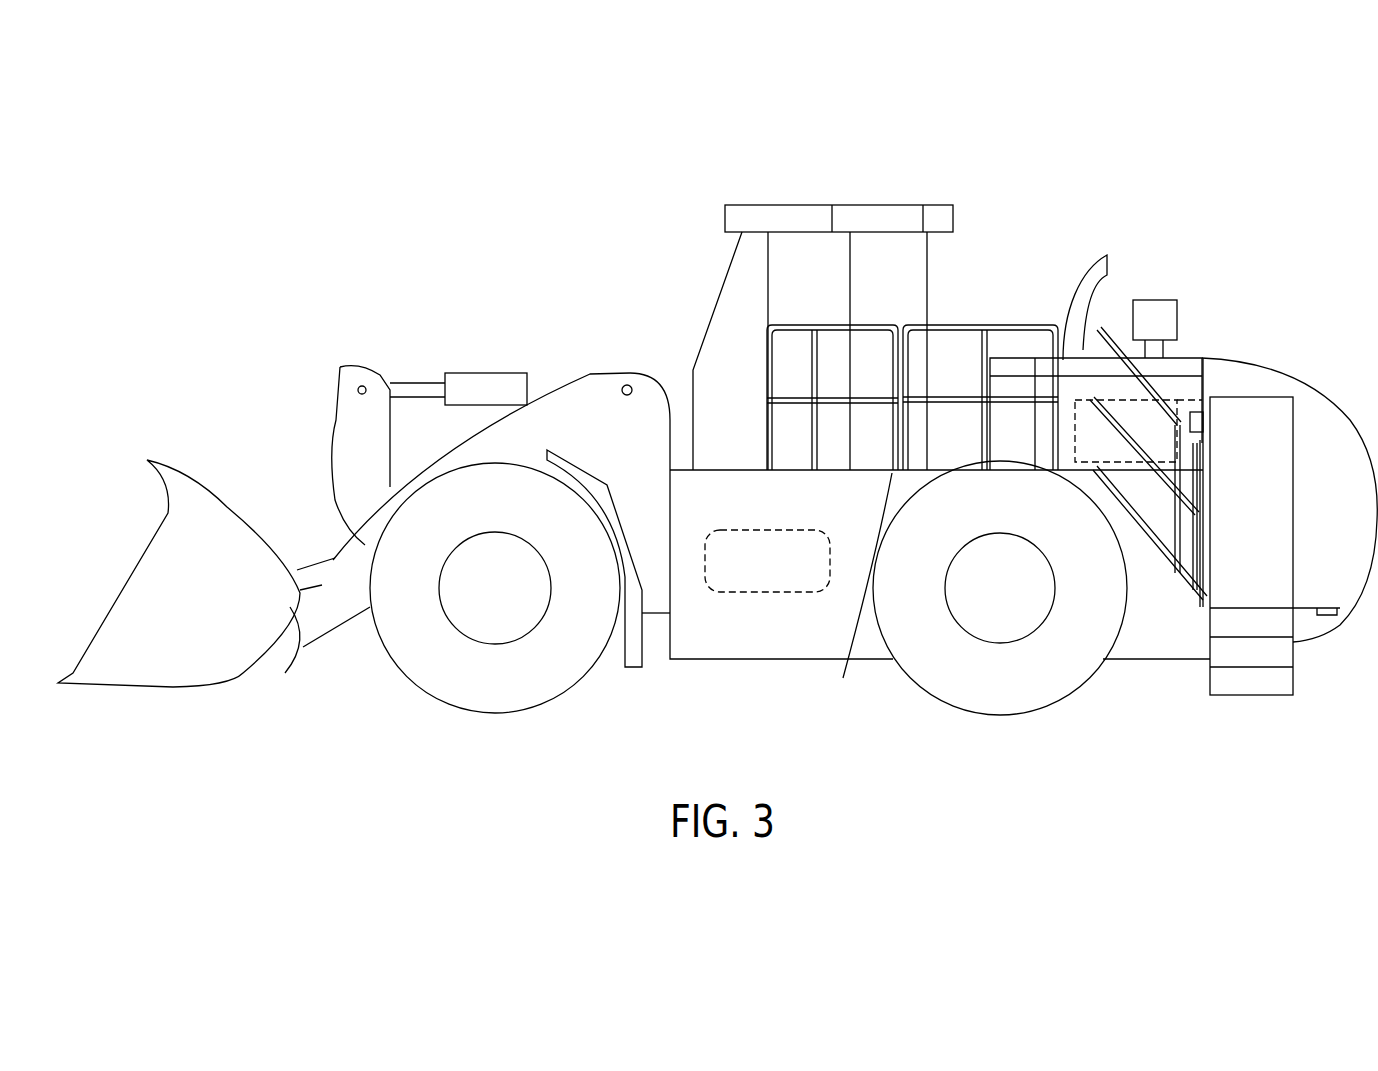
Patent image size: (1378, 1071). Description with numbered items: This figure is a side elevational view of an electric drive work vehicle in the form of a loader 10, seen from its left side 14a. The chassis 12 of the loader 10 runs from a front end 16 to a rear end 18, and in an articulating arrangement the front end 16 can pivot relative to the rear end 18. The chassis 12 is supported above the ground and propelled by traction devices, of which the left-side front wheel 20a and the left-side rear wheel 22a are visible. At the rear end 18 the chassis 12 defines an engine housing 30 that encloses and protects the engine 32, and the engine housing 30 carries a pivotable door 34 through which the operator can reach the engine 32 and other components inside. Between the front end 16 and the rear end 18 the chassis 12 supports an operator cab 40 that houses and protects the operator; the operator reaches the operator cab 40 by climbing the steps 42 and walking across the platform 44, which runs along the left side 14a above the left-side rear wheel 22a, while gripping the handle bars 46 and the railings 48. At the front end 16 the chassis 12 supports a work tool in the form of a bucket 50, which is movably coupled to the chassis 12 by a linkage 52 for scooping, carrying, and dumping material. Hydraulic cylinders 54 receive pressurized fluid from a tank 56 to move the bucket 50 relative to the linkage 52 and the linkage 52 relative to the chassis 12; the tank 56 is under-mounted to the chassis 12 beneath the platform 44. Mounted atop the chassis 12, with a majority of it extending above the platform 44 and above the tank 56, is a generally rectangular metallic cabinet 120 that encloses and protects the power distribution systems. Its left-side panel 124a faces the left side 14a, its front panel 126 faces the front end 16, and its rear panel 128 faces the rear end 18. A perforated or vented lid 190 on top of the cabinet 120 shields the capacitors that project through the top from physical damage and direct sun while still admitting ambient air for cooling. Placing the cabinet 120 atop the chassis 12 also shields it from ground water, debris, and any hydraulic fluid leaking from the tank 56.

The loader 10 is at (1125, 197).
The chassis 12 is at (805, 645).
The left side 14a is at (985, 745).
The front end 16 is at (207, 335).
The rear end 18 is at (1327, 335).
The left-side front wheel 20a is at (428, 672).
The left-side rear wheel 22a is at (1040, 690).
The engine housing 30 is at (1188, 368).
The engine 32 is at (1190, 398).
The pivotable door 34 is at (1197, 445).
The operator cab 40 is at (808, 213).
The steps 42 is at (1232, 695).
The platform 44 is at (840, 472).
The handle bars 46 is at (1198, 545).
The railings 48 is at (1020, 325).
The bucket 50 is at (162, 683).
The linkage 52 is at (335, 622).
The hydraulic cylinders 54 is at (495, 390).
The tank 56 is at (724, 593).
The cabinet 120 is at (1022, 368).
The left-side panel 124a is at (1013, 450).
The front panel 126 is at (990, 420).
The rear panel 128 is at (1033, 418).
The vented lid 190 is at (1000, 352).